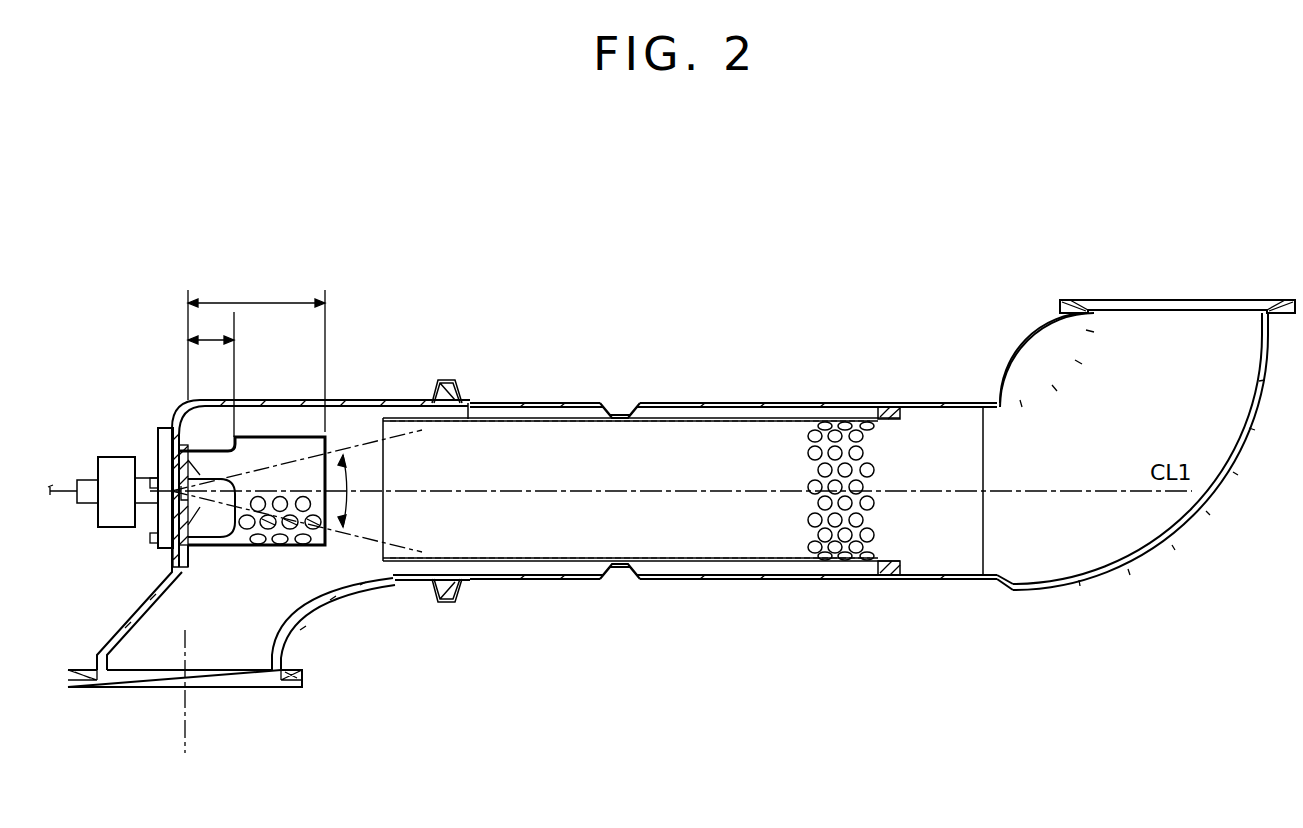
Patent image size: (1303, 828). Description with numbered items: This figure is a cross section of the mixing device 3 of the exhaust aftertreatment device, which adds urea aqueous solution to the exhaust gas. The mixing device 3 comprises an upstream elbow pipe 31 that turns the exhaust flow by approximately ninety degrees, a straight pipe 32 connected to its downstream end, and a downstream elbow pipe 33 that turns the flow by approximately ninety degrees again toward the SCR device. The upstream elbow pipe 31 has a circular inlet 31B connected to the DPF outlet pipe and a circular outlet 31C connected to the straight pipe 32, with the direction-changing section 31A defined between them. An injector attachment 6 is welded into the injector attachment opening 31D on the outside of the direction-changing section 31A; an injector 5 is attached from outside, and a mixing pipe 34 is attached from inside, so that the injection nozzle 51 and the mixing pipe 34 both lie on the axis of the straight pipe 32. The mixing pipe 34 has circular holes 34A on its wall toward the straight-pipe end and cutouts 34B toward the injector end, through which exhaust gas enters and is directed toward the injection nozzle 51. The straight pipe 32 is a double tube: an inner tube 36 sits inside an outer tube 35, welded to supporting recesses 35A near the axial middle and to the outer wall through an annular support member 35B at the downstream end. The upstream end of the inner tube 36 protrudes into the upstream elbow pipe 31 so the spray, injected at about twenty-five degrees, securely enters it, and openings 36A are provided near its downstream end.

The mixing device 3 is at (843, 229).
The injector 5 is at (115, 458).
The injector attachment 6 is at (168, 445).
The upstream elbow pipe 31 is at (342, 402).
The direction-changing section 31A is at (302, 580).
The circular inlet 31B is at (210, 688).
The circular outlet 31C is at (470, 577).
The injector attachment opening 31D is at (177, 423).
The straight pipe 32 is at (682, 403).
The downstream elbow pipe 33 is at (1063, 378).
The mixing pipe 34 is at (283, 445).
The circular holes 34A is at (287, 548).
The cutouts 34B is at (206, 532).
The outer tube 35 is at (747, 403).
The supporting recesses 35A is at (633, 403).
The annular support member 35B is at (887, 405).
The inner tube 36 is at (535, 430).
The openings 36A is at (823, 503).
The injection nozzle 51 is at (186, 507).